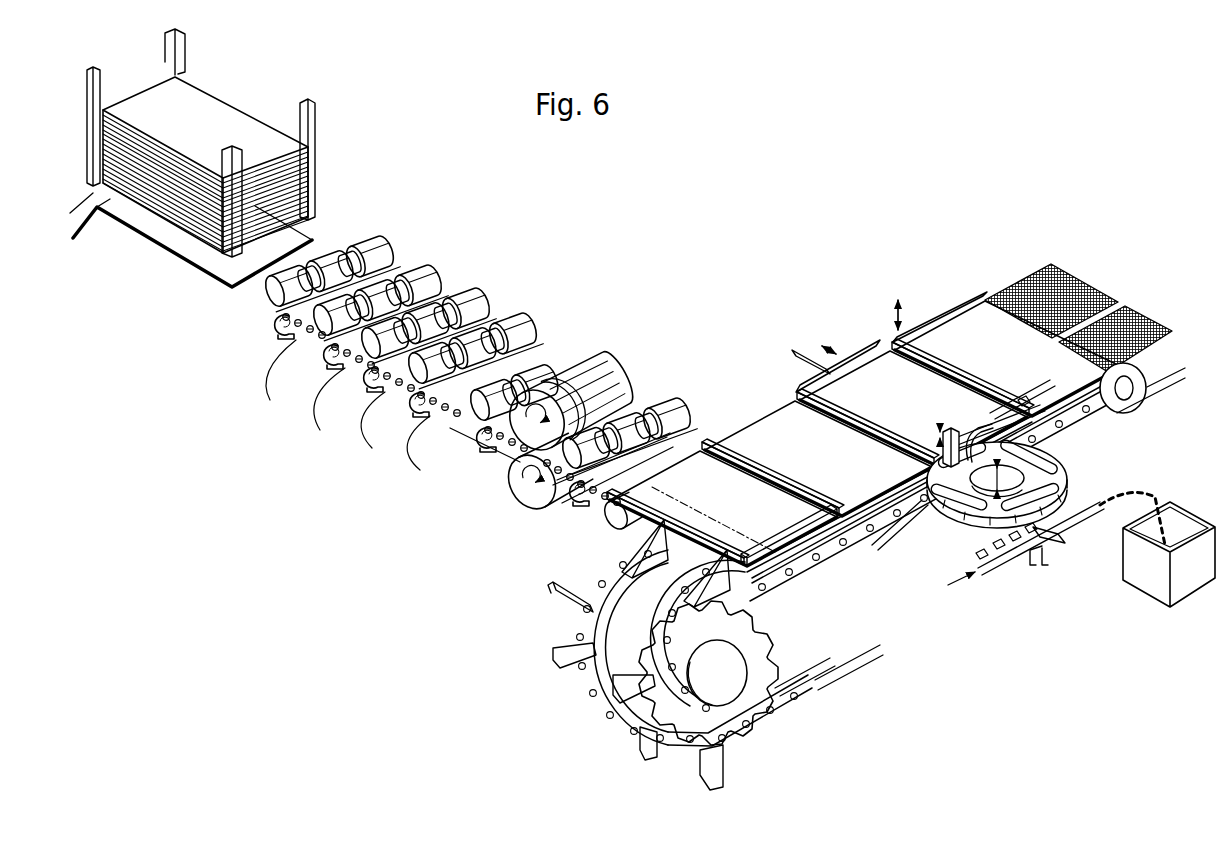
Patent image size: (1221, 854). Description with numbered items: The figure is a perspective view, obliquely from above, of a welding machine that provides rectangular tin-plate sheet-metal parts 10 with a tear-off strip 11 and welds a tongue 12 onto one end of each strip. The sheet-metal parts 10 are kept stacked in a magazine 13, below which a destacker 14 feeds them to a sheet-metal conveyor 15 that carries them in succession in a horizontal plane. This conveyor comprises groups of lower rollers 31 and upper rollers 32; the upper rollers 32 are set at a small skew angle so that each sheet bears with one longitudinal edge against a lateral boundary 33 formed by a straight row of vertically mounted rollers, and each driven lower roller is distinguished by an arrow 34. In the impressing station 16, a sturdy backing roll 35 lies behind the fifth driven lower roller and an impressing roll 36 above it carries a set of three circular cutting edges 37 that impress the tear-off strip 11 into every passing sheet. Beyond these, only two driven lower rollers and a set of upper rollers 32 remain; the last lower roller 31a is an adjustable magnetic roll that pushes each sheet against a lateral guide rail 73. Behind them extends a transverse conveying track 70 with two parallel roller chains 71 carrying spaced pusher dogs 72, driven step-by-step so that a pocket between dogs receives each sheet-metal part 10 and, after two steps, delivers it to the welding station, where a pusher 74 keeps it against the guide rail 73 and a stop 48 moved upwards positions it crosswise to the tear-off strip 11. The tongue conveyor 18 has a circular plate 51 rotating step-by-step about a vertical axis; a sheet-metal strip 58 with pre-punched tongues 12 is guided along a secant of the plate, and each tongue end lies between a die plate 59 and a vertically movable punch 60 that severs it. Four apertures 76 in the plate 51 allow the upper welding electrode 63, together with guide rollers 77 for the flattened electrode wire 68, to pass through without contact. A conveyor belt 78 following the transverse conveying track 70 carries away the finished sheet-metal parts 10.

The sheet-metal parts 10 is at (198, 102).
The tear-off strip 11 is at (653, 513).
The tongue 12 is at (980, 550).
The magazine 13 is at (324, 132).
The destacker 14 is at (96, 232).
The sheet-metal conveyor 15 is at (517, 263).
The impressing station 16 is at (628, 330).
The tongue conveyor 18 is at (1092, 455).
The lower rollers 31 is at (274, 318).
The last lower roller 31a is at (610, 520).
The upper rollers 32 is at (457, 295).
The lateral boundary 33 is at (510, 453).
The arrow 34 is at (305, 362).
The backing roll 35 is at (523, 495).
The impressing roll 36 is at (623, 366).
The circular cutting edges 37 is at (558, 402).
The stop 48 is at (893, 340).
The circular plate 51 is at (1063, 480).
The sheet-metal strip 58 is at (1007, 563).
The die plate 59 is at (1063, 538).
The punch 60 is at (1043, 562).
The upper welding electrode 63 is at (941, 424).
The electrode wire 68 is at (1012, 404).
The transverse conveying track 70 is at (823, 628).
The roller chains 71 is at (578, 700).
The pusher dogs 72 is at (640, 545).
The lateral guide rail 73 is at (790, 562).
The pusher 74 is at (852, 357).
The apertures 76 is at (1037, 463).
The guide rollers 77 is at (1000, 433).
The conveyor belt 78 is at (1030, 280).